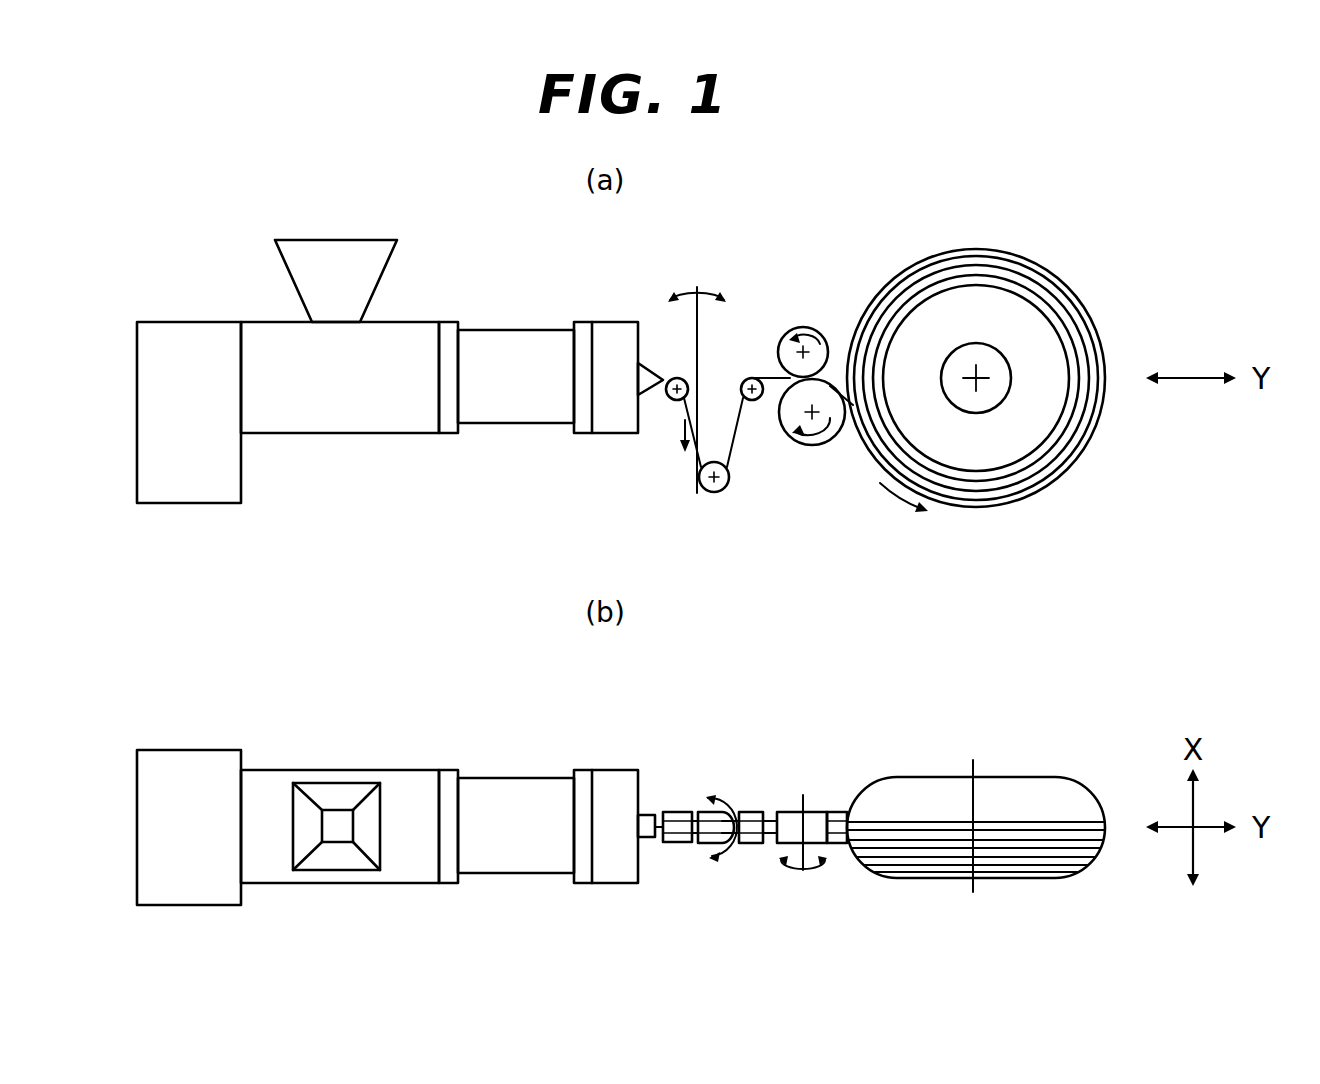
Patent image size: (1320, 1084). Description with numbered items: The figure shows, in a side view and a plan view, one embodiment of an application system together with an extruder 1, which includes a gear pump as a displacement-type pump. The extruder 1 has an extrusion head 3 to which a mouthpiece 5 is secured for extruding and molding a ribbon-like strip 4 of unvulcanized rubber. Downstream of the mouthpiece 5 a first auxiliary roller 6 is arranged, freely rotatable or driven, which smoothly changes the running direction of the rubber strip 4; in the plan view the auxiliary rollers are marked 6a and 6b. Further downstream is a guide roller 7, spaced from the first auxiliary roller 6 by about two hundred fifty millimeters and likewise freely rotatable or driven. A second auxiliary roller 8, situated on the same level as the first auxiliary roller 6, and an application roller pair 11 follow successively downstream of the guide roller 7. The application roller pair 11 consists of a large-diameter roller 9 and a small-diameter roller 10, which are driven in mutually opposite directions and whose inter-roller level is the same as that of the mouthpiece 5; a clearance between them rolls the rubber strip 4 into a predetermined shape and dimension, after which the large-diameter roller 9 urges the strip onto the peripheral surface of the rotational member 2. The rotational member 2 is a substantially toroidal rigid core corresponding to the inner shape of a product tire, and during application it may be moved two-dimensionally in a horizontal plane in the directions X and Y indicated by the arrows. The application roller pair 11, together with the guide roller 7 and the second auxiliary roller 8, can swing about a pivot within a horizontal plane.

The extruder 1 is at (410, 300).
The rotational member 2 is at (1066, 264).
The extrusion head 3 is at (615, 337).
The ribbon-like strip 4 is at (700, 393).
The mouthpiece 5 is at (650, 370).
The first auxiliary roller 6 is at (675, 402).
The guide roller 6a is at (672, 845).
The guide roller 6b is at (755, 845).
The guide roller 7 is at (708, 490).
The second auxiliary roller 8 is at (752, 401).
The large-diameter roller 9 is at (828, 418).
The small-diameter roller 10 is at (818, 347).
The application roller pair 11 is at (762, 332).